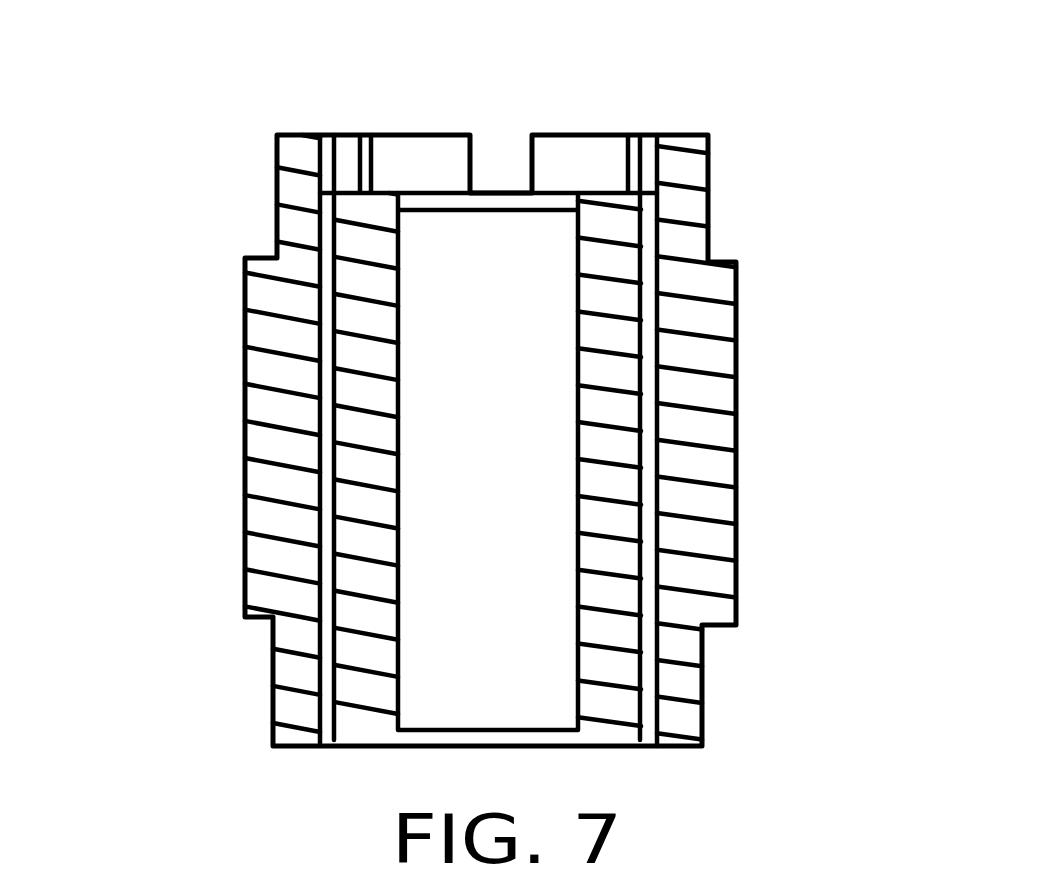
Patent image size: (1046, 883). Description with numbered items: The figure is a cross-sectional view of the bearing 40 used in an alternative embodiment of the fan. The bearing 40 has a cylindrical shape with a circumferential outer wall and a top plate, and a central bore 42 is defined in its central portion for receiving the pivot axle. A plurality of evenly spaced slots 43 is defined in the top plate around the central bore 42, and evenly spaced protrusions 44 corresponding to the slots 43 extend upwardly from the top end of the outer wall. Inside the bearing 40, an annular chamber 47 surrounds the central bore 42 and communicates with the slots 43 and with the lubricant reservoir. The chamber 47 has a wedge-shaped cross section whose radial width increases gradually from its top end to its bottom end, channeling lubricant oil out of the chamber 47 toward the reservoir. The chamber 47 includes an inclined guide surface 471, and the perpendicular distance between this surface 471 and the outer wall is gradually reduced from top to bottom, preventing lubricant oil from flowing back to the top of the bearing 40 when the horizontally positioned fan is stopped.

The bearing 40 is at (747, 193).
The central bore 42 is at (512, 280).
The slots 43 is at (325, 205).
The protrusions 44 is at (403, 153).
The inclined guide surface 471 is at (243, 432).
The annular chamber 47 is at (330, 532).